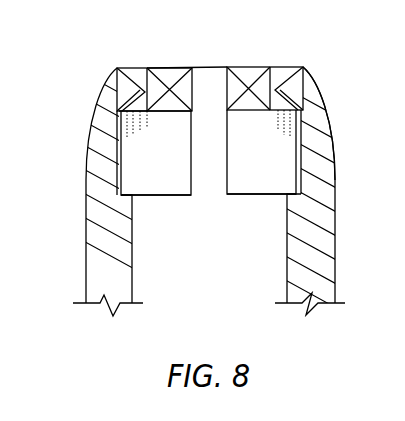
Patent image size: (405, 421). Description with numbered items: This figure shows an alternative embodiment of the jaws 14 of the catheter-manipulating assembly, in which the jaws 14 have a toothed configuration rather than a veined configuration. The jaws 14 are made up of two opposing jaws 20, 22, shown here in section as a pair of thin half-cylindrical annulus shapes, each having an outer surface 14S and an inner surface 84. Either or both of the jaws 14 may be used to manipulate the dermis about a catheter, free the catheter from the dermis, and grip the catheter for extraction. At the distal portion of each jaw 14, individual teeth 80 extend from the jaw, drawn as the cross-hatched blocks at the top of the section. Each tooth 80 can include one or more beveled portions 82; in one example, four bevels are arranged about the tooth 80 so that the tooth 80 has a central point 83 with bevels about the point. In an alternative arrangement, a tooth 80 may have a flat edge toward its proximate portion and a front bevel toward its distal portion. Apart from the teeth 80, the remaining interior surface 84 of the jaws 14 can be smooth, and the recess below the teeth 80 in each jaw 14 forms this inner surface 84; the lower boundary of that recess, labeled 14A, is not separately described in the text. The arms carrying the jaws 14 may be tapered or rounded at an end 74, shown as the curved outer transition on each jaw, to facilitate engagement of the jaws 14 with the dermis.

The jaws 14 is at (210, 196).
The outer surface 14S is at (306, 78).
The bottom surface of recess 14A is at (211, 222).
The jaw 20 is at (281, 73).
The jaw 22 is at (126, 71).
The end 74 is at (94, 113).
The tooth 80 is at (182, 67).
The beveled portion 82 is at (242, 67).
The central point 83 is at (171, 67).
The interior surface 84 is at (270, 160).